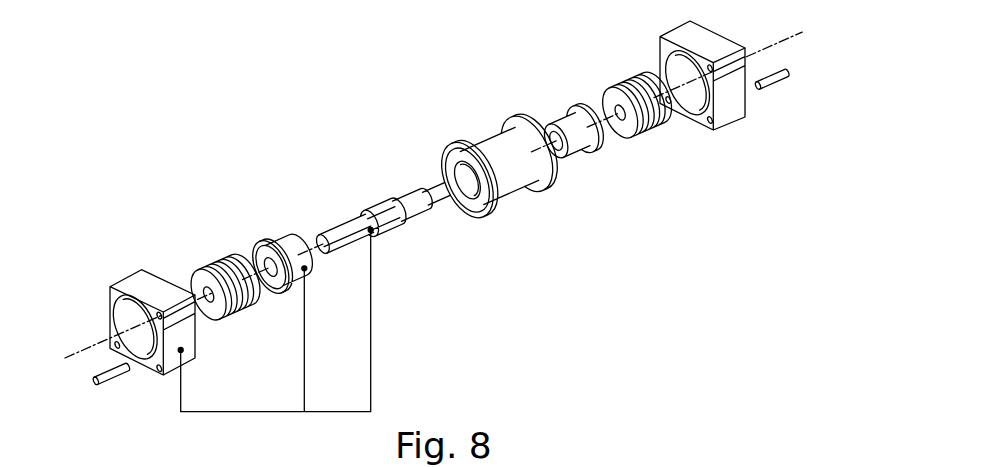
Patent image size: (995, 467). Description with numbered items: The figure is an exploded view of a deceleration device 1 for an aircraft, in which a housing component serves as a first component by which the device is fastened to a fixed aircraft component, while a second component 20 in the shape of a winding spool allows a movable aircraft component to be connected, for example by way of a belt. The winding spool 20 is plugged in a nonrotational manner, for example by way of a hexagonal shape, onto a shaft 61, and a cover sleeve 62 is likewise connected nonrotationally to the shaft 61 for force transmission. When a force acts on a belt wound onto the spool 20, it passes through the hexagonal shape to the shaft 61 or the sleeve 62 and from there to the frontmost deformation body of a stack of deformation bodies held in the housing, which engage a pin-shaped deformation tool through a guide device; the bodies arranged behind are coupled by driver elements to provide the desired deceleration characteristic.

The deceleration device 1 is at (336, 127).
The second component 20 is at (490, 147).
The shaft 61 is at (403, 207).
The cover sleeve 62 is at (294, 247).